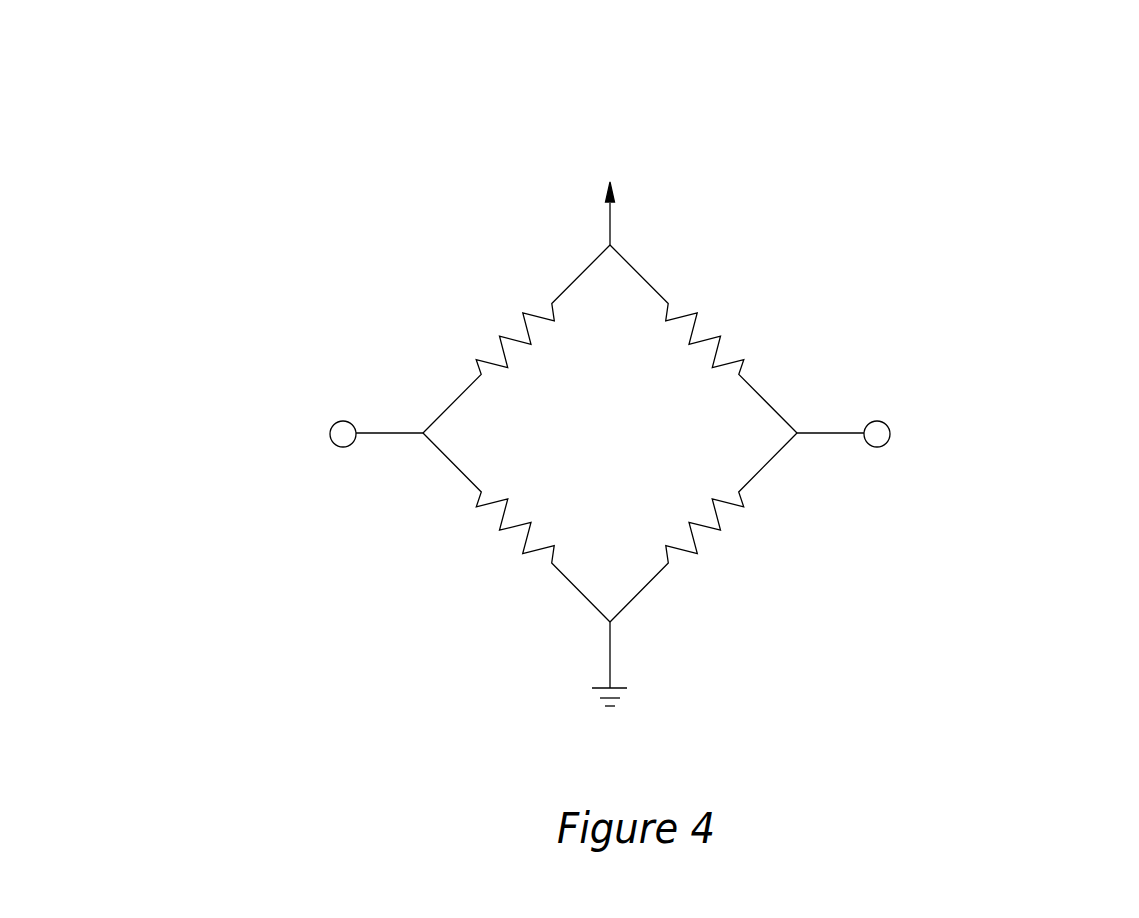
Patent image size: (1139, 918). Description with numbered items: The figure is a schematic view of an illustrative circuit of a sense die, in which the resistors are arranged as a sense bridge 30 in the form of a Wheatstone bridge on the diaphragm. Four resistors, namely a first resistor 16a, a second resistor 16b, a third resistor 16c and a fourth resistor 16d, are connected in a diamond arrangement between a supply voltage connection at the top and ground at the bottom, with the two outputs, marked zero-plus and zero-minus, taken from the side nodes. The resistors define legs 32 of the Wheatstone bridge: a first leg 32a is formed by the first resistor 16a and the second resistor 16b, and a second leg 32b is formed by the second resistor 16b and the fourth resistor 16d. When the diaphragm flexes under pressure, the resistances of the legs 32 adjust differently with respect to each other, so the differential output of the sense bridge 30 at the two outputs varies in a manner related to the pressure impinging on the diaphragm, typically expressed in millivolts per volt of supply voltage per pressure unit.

The sense bridge 30 is at (634, 369).
The legs 32 is at (278, 248).
The first leg 32a is at (258, 355).
The second leg 32b is at (993, 358).
The first resistor 16a is at (500, 335).
The second resistor 16b is at (720, 335).
The third resistor 16c is at (500, 535).
The fourth resistor 16d is at (720, 533).